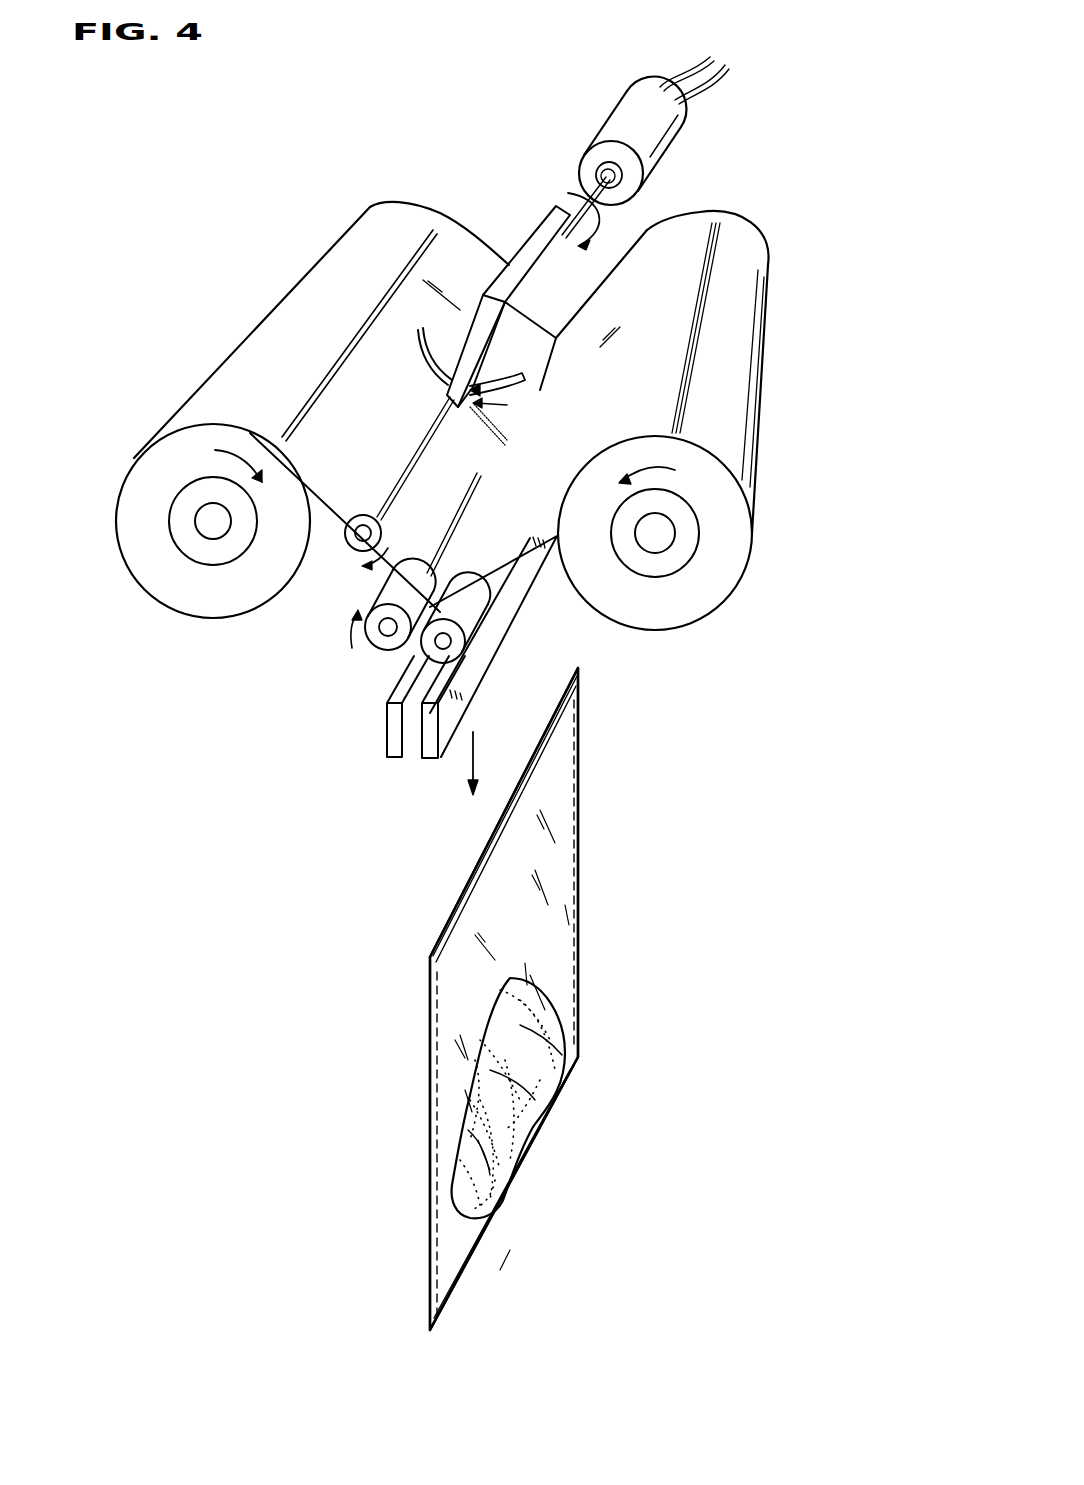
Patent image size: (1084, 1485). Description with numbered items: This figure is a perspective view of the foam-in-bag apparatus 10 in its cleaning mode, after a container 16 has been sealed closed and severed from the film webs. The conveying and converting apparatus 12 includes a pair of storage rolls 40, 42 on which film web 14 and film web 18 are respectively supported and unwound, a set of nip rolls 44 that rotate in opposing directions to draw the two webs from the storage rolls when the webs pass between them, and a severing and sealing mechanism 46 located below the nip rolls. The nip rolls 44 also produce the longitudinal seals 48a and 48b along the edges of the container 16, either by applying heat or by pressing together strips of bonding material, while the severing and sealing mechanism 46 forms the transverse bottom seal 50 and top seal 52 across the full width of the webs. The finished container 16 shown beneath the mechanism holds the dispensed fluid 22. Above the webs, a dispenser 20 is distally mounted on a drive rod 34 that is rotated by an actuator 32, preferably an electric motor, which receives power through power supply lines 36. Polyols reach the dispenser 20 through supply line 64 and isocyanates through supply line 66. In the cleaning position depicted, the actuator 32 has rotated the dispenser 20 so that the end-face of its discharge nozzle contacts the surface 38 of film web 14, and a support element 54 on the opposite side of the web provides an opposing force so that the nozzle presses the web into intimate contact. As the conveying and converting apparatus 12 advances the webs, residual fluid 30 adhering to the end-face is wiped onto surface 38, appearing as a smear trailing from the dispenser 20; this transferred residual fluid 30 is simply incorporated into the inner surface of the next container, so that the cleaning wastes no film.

The apparatus 10 is at (770, 129).
The conveying and converting apparatus 12 is at (300, 659).
The film web 14 is at (268, 358).
The container 16 is at (428, 1079).
The film web 18 is at (730, 243).
The dispenser 20 is at (542, 233).
The fluid 22 is at (538, 1088).
The residual fluid 30 is at (482, 425).
The actuator 32 is at (627, 110).
The drive rod 34 is at (567, 195).
The power supply lines 36 is at (700, 56).
The surface 38 is at (462, 257).
The storage roll 40 is at (187, 542).
The storage roll 42 is at (678, 553).
The nip rolls 44 is at (375, 640).
The severing and sealing mechanism 46 is at (428, 743).
The longitudinal seal 48a is at (437, 1225).
The longitudinal seal 48b is at (577, 800).
The bottom seal 50 is at (528, 1167).
The top seal 52 is at (462, 920).
The support element 54 is at (353, 547).
The supply line 64 is at (533, 397).
The supply line 66 is at (440, 355).